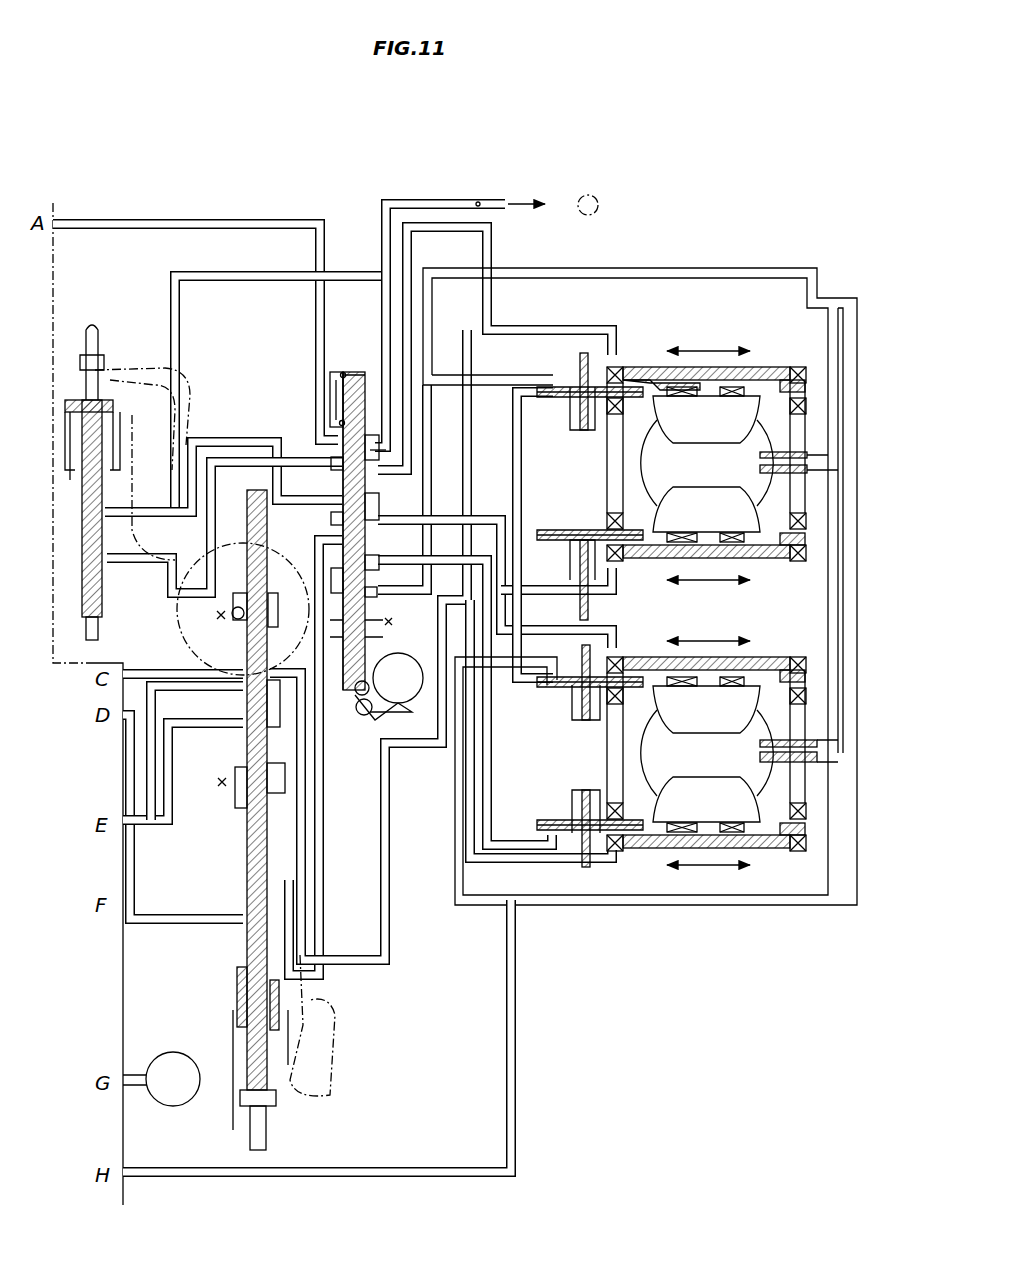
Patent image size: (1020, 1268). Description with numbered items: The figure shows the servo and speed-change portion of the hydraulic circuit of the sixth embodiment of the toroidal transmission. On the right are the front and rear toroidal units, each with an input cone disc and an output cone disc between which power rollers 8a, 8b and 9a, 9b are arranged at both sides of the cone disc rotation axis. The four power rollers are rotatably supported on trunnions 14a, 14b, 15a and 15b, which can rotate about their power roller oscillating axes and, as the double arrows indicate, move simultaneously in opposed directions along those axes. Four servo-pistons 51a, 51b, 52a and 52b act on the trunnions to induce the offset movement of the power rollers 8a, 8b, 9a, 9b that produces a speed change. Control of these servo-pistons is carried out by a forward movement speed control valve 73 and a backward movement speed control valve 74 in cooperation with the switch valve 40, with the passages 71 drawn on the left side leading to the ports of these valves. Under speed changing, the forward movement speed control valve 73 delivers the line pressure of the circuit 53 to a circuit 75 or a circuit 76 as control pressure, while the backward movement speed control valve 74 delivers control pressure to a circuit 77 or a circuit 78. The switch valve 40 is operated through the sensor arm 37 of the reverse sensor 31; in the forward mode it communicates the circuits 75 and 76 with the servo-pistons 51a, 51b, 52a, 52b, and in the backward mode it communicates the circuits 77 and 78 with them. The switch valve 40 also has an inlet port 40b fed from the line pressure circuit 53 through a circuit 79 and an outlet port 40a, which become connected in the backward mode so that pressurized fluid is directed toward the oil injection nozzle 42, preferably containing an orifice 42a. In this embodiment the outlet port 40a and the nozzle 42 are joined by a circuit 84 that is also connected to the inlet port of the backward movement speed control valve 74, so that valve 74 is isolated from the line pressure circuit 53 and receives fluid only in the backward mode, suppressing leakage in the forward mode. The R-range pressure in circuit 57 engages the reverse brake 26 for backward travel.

The power roller 8a is at (712, 400).
The power roller 8b is at (712, 528).
The power roller 9a is at (775, 709).
The power roller 9b is at (775, 792).
The trunnion 14a is at (780, 367).
The trunnion 14b is at (805, 545).
The trunnion 15a is at (722, 662).
The trunnion 15b is at (722, 832).
The reverse brake 26 is at (170, 1052).
The reverse sensor 31 is at (405, 665).
The sensor arm 37 is at (395, 718).
The switch valve 40 is at (378, 598).
The outlet port 40a is at (388, 452).
The inlet port 40b is at (318, 455).
The oil injection nozzle 42 is at (500, 200).
The orifice 42a is at (487, 200).
The servo-piston 51a is at (592, 353).
The servo-piston 51b is at (592, 580).
The servo-piston 52a is at (593, 715).
The servo-piston 52b is at (594, 870).
The line pressure circuit 53 is at (165, 927).
The circuit 57 is at (136, 1090).
The oil passage 71 is at (118, 678).
The forward movement speed control valve 73 is at (228, 978).
The backward movement speed control valve 74 is at (108, 578).
The circuit 75 is at (320, 870).
The circuit 76 is at (308, 922).
The circuit 77 is at (232, 440).
The circuit 78 is at (168, 600).
The circuit 79 is at (150, 228).
The circuit 84 is at (260, 272).